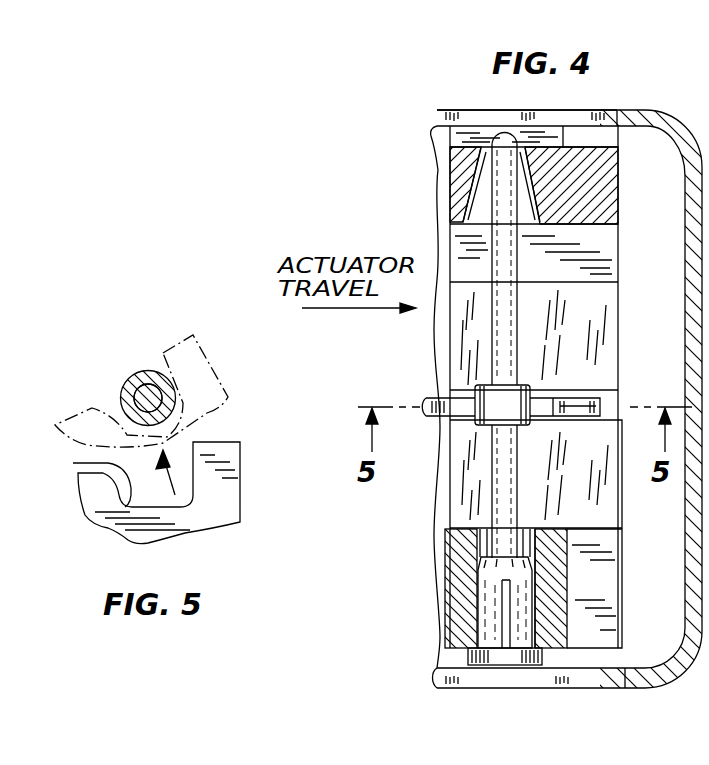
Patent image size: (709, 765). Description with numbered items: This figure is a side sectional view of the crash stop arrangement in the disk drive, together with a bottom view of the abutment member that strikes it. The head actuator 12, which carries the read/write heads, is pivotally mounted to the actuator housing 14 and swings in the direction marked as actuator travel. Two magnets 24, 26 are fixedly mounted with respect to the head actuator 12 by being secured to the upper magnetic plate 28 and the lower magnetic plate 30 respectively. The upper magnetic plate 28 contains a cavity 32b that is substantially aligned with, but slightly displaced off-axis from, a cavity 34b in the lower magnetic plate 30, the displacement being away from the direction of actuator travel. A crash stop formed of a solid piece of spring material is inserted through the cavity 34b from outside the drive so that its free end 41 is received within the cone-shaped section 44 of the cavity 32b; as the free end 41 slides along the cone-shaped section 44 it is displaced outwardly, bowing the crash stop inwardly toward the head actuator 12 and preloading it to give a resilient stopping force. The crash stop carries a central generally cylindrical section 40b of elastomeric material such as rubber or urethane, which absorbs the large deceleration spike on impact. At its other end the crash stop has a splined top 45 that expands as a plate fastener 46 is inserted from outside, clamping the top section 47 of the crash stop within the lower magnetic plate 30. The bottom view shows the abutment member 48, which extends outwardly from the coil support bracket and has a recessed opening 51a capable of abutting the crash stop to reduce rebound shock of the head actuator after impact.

In FIG. 4, the actuator housing 14 is at (437, 113).
In FIG. 4, the free end 41 is at (478, 140).
In FIG. 4, the cavity 32b is at (527, 156).
In FIG. 4, the upper magnetic plate 28 is at (619, 161).
In FIG. 4, the cone-shaped section 44 is at (541, 190).
In FIG. 4, the magnet 24 is at (607, 324).
In FIG. 4, the head actuator 12 is at (437, 400).
In FIG. 4, the central generally cylindrical section 40b is at (520, 386).
In FIG. 5, the central generally cylindrical section 40b is at (134, 381).
In FIG. 4, the magnet 26 is at (620, 502).
In FIG. 4, the lower magnetic plate 30 is at (622, 576).
In FIG. 4, the bore 47 is at (455, 628).
In FIG. 4, the plate fastener 46 is at (511, 664).
In FIG. 4, the splined top 45 is at (551, 664).
In FIG. 4, the cavity 34b is at (545, 622).
In FIG. 5, the abutment member 48 is at (243, 468).
In FIG. 5, the recessed opening 51a is at (76, 463).